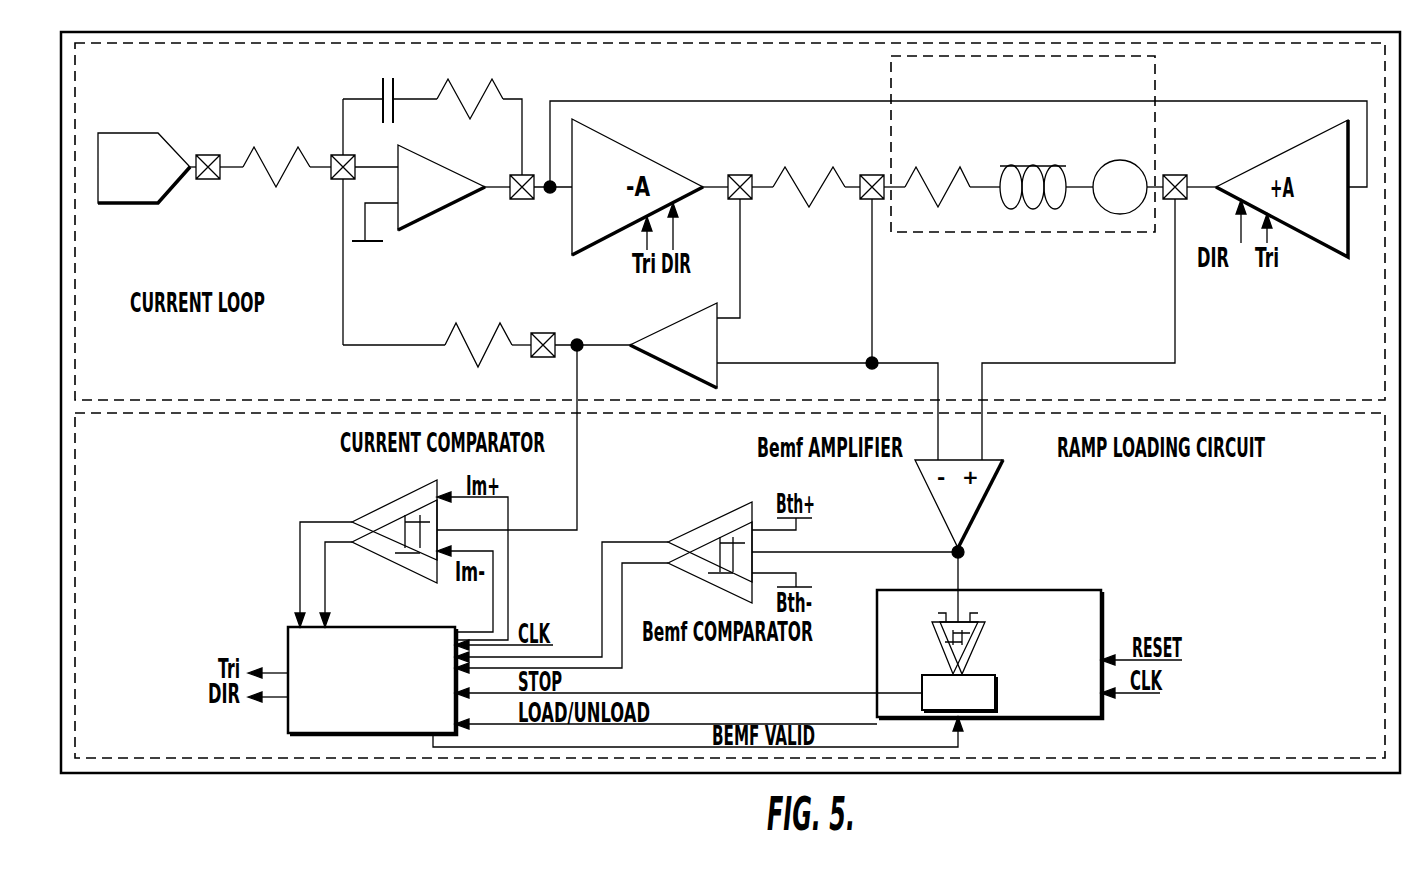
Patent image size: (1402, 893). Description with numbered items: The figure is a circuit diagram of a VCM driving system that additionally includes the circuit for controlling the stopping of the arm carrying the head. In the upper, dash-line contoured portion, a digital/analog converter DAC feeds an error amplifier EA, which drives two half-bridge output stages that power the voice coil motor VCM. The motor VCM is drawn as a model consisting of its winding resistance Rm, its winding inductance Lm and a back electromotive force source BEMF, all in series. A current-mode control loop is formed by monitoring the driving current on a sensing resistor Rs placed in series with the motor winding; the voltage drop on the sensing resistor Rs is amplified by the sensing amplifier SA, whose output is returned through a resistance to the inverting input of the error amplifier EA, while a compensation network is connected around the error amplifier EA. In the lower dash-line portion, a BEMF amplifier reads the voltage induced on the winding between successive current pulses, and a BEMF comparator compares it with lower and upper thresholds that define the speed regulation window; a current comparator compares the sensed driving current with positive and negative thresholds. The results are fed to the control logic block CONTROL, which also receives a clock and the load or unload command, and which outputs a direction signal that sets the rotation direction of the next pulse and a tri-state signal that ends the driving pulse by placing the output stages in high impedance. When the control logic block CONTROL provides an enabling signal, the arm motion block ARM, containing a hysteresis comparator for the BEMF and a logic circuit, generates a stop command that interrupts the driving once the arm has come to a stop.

The digital/analog converter DAC is at (144, 168).
The error amplifier EA is at (441, 187).
The sensing amplifier SA is at (673, 345).
The sensing resistor Rs is at (809, 170).
The voice coil motor VCM is at (1023, 144).
The motor winding resistance Rm is at (937, 170).
The motor winding inductance Lm is at (1033, 171).
The back electromotive force source BEMF is at (1120, 173).
The control logic block CONTROL is at (372, 681).
The arm motion block ARM is at (990, 654).